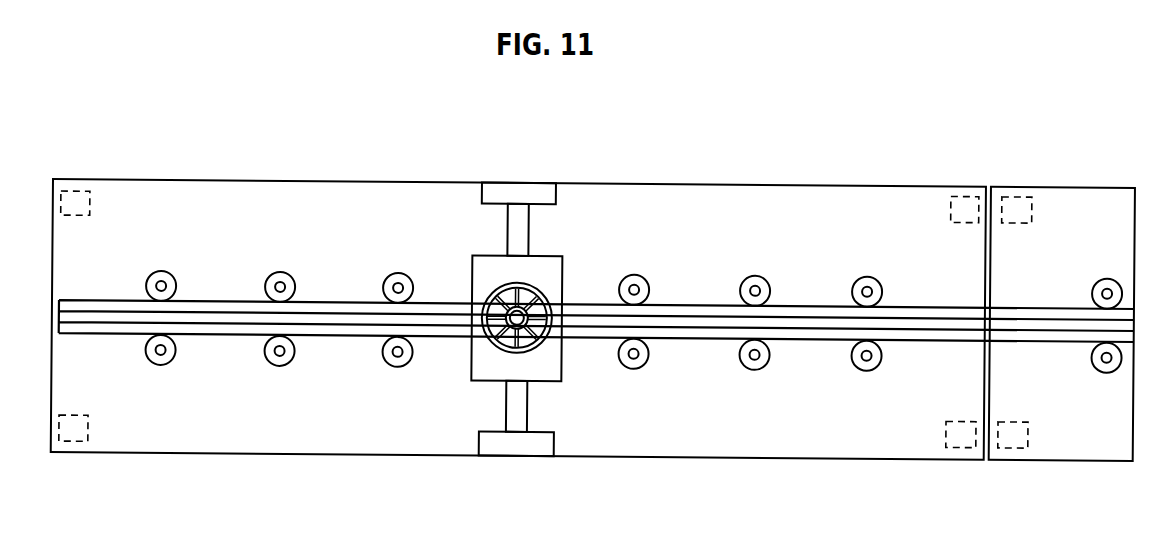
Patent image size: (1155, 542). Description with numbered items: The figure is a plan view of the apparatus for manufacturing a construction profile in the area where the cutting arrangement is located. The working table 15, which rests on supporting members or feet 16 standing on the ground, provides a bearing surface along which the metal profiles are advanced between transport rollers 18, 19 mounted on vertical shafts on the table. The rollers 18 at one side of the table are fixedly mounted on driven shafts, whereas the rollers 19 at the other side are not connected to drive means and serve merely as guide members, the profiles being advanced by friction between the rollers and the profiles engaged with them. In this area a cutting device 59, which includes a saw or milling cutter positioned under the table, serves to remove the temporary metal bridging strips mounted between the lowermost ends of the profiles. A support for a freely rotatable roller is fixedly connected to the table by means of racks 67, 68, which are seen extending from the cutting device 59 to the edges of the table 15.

The working table 15 is at (1103, 429).
The supporting members or feet 16 is at (1025, 204).
The transport rollers 18 is at (266, 275).
The transport rollers 19 is at (272, 361).
The cutting device 59 is at (575, 268).
The rack 67 is at (520, 233).
The rack 68 is at (523, 184).